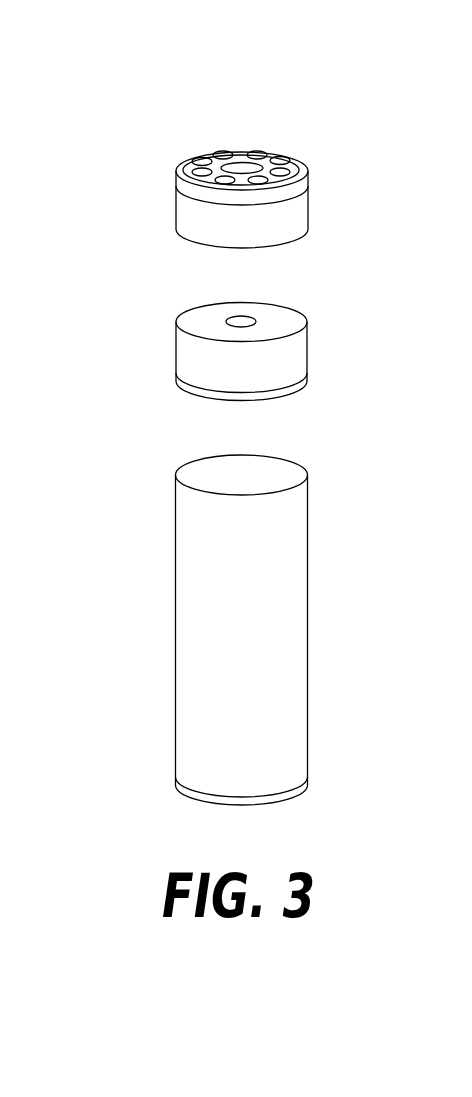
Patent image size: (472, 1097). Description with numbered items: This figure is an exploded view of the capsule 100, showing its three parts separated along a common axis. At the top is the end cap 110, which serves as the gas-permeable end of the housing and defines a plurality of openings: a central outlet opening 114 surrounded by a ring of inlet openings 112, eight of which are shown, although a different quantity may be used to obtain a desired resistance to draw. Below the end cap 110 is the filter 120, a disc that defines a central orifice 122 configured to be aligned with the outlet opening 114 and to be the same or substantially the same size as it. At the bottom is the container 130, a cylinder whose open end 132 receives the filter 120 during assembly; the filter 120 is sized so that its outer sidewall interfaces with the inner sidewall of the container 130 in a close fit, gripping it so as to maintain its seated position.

The capsule 100 is at (260, 29).
The end cap 110 is at (159, 144).
The inlet openings 112 is at (284, 161).
The outlet opening 114 is at (241, 164).
The filter 120 is at (159, 312).
The orifice 122 is at (244, 319).
The container 130 is at (159, 594).
The open end 132 is at (244, 467).